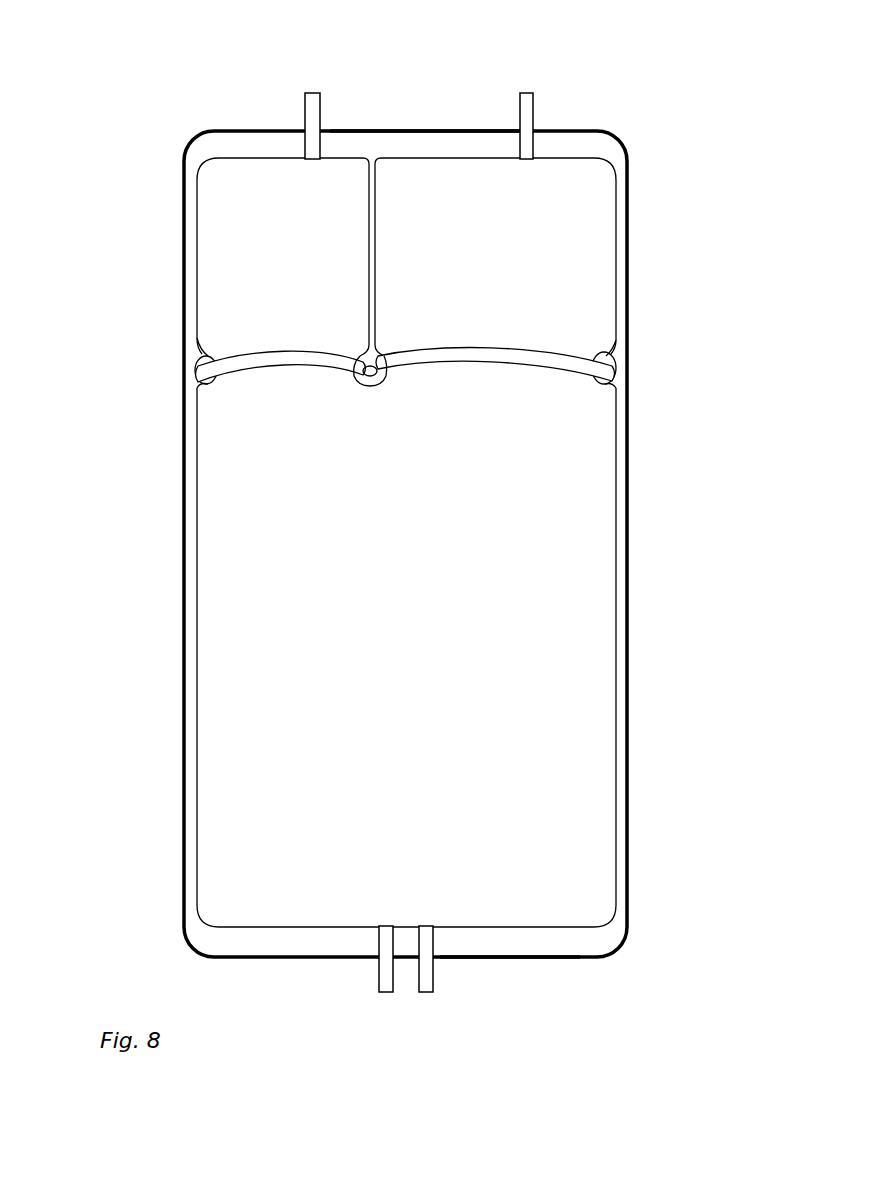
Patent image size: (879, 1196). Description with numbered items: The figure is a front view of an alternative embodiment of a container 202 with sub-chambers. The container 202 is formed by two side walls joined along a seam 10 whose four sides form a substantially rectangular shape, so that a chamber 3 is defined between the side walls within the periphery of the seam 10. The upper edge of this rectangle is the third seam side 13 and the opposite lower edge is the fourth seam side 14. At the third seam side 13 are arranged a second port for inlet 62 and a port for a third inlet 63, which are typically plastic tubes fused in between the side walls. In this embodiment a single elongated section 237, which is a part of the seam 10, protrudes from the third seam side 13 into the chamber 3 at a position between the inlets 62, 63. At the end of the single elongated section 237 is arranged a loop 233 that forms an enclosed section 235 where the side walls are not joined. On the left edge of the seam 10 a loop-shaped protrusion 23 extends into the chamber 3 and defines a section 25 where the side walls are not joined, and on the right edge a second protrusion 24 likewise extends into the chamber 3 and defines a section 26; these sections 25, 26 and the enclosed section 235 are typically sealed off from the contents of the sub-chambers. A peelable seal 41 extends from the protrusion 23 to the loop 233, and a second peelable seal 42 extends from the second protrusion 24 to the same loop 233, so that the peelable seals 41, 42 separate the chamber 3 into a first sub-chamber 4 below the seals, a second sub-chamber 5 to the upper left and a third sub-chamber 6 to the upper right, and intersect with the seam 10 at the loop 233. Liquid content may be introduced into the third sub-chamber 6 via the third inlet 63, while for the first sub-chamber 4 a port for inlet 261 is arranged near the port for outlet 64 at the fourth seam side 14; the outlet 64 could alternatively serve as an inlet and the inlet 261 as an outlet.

The container 202 is at (122, 76).
The seam 10 is at (170, 156).
The second sub-chamber 5 is at (232, 244).
The third sub-chamber 6 is at (598, 246).
The first sub-chamber 4 is at (583, 600).
The chamber 3 is at (596, 452).
The third seam side 13 is at (445, 142).
The fourth seam side 14 is at (517, 938).
The second port for inlet 62 is at (313, 102).
The port for third inlet 63 is at (526, 102).
The port for outlet 64 is at (427, 975).
The port for inlet 261 is at (386, 980).
The single elongated section 237 is at (370, 246).
The peelable seal 41 is at (285, 358).
The second peelable seal 42 is at (488, 358).
The protrusion 23 is at (206, 356).
The section 25 is at (214, 386).
The second protrusion 24 is at (596, 356).
The section 26 is at (604, 352).
The loop 233 is at (365, 388).
The enclosed section 235 is at (376, 388).